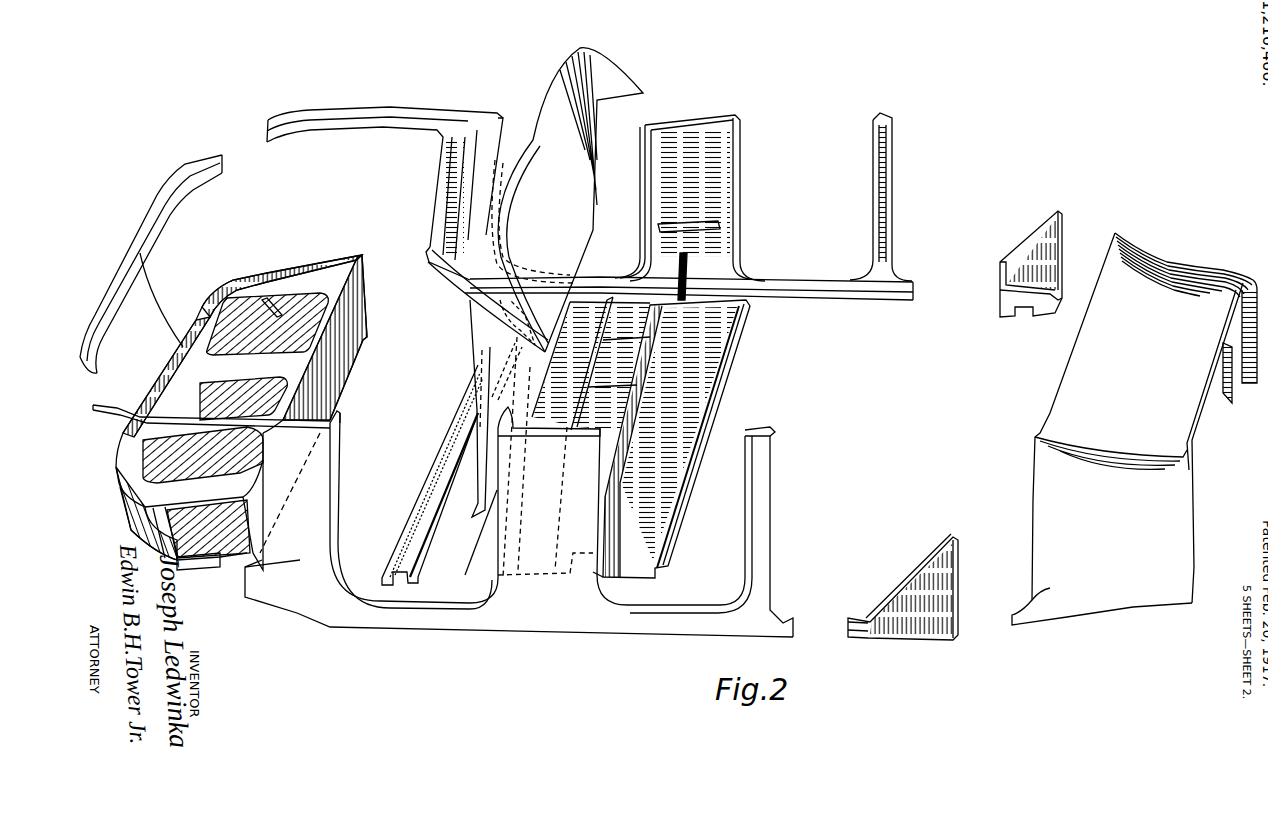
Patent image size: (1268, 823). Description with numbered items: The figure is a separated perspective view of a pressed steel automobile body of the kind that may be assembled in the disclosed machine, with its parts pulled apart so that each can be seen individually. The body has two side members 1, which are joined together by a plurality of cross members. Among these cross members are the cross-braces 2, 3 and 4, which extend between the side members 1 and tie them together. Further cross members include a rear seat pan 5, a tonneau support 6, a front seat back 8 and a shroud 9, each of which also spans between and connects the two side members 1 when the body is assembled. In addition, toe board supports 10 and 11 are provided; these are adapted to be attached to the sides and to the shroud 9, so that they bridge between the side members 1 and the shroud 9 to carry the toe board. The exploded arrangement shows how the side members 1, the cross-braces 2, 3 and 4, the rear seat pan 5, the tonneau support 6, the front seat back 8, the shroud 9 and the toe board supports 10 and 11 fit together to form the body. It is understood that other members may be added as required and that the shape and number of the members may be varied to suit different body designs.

The side member 1 is at (452, 118).
The cross-brace 2 is at (707, 370).
The cross-brace 3 is at (578, 317).
The cross-brace 4 is at (463, 417).
The rear seat pan 5 is at (353, 312).
The tonneau support 6 is at (170, 213).
The front seat back 8 is at (593, 77).
The shroud 9 is at (1173, 265).
The toe board support 10 is at (943, 595).
The toe board support 11 is at (1045, 240).